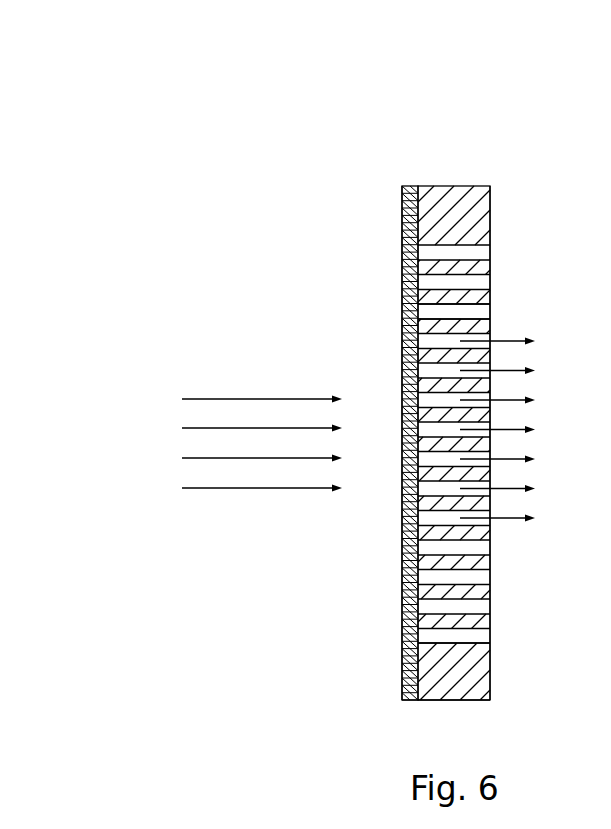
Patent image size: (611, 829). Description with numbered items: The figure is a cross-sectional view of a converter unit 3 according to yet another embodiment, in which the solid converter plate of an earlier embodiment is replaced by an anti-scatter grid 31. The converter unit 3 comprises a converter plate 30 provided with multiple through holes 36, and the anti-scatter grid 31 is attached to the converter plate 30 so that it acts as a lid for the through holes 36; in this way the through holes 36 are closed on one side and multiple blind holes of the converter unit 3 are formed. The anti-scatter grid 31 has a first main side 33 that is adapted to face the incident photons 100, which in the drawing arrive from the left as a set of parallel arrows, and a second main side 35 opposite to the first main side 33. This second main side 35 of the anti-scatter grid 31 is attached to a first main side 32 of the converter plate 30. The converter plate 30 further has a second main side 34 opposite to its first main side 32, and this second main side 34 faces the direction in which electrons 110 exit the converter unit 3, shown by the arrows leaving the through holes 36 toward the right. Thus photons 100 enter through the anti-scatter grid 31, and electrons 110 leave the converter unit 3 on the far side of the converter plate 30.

The converter unit 3 is at (350, 99).
The converter plate 30 is at (460, 186).
The anti-scatter grid 31 is at (412, 186).
The first main side of the converter plate 32 is at (412, 700).
The first main side of the anti-scatter grid 33 is at (402, 212).
The second main side of the converter plate 34 is at (490, 214).
The second main side of the anti-scatter grid 35 is at (420, 693).
The through holes 36 is at (483, 308).
The incident photons 100 is at (255, 399).
The electrons 110 is at (513, 427).